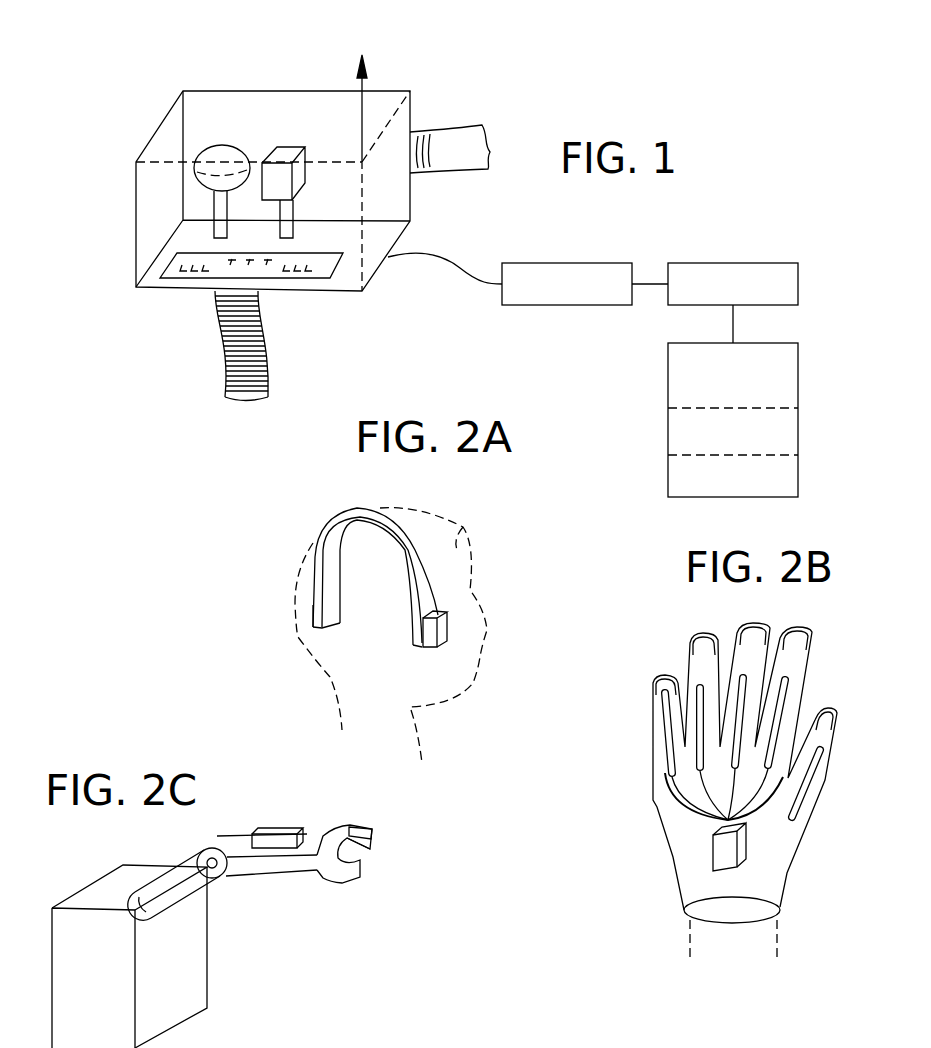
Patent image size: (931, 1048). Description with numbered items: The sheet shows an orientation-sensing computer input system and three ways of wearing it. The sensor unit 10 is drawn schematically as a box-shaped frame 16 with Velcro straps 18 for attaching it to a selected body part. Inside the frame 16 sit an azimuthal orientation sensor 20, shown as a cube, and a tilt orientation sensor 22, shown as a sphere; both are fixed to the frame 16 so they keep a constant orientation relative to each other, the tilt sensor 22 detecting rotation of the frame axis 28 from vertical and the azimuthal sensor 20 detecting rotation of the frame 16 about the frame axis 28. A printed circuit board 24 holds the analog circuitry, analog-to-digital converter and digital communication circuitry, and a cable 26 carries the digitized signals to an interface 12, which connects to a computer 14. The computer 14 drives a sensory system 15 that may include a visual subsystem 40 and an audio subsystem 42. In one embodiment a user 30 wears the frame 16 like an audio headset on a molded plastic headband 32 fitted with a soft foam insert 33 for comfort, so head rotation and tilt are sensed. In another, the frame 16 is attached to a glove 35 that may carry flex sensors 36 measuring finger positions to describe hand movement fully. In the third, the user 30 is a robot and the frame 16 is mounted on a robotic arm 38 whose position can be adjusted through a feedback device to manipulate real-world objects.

In FIG. 1, the sensor unit 10 is at (207, 45).
In FIG. 2A, the sensor unit 10 is at (310, 478).
In FIG. 2B, the sensor unit 10 is at (655, 640).
In FIG. 1, the interface 12 is at (573, 263).
In FIG. 1, the computer 14 is at (730, 263).
In FIG. 1, the sensory system 15 is at (668, 367).
In FIG. 1, the frame 16 is at (135, 225).
In FIG. 2A, the frame 16 is at (447, 637).
In FIG. 2B, the frame 16 is at (723, 843).
In FIG. 2C, the frame 16 is at (280, 832).
In FIG. 1, the straps 18 is at (268, 355).
In FIG. 1, the azimuthal orientation sensor 20 is at (280, 147).
In FIG. 1, the tilt orientation sensor 22 is at (213, 147).
In FIG. 1, the printed circuit board 24 is at (300, 278).
In FIG. 1, the cable 26 is at (437, 250).
In FIG. 1, the frame axis 28 is at (357, 85).
In FIG. 2A, the user 30 is at (445, 537).
In FIG. 2C, the user 30 is at (115, 882).
In FIG. 2A, the headband 32 is at (382, 507).
In FIG. 2A, the soft foam insert 33 is at (333, 622).
In FIG. 2B, the glove 35 is at (680, 815).
In FIG. 2B, the flex sensors 36 is at (777, 697).
In FIG. 2C, the robotic arm 38 is at (263, 863).
In FIG. 1, the visual subsystem 40 is at (668, 428).
In FIG. 1, the audio subsystem 42 is at (668, 475).